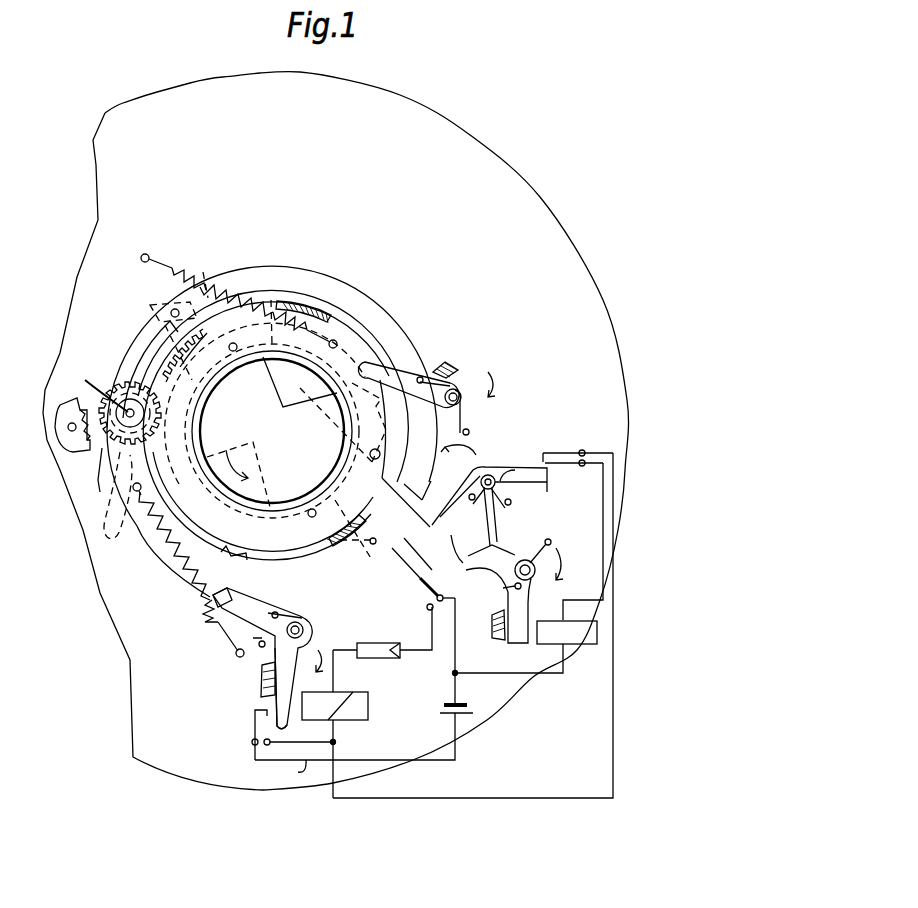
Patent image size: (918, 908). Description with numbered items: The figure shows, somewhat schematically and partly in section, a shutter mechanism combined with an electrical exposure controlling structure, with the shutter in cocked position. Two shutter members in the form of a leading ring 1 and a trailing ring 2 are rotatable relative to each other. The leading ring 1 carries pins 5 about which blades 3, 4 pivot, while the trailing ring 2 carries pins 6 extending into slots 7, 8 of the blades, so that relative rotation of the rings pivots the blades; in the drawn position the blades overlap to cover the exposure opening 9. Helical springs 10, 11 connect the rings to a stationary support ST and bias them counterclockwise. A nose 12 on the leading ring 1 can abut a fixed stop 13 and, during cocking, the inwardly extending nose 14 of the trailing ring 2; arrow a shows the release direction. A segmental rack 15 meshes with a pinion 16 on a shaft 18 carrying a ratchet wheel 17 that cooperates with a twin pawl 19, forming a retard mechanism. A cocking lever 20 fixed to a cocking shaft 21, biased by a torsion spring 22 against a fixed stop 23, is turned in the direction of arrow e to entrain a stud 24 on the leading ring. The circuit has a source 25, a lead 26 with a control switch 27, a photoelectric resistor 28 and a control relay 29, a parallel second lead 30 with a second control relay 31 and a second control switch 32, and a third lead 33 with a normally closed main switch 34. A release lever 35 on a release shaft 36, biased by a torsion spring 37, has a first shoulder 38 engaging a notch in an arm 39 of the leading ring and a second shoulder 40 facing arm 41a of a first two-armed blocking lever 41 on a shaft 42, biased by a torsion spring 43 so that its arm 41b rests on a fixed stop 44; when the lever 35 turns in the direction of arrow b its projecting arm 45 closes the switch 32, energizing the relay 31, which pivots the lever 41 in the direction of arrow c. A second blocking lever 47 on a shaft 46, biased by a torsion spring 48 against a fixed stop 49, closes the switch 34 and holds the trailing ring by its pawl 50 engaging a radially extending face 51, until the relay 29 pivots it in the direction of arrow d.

The stationary support ST is at (512, 180).
The leading ring 1 is at (352, 342).
The trailing ring 2 is at (326, 284).
The blade 3 is at (264, 298).
The blade 4 is at (296, 309).
The pins 5 is at (229, 347).
The pins 6 is at (170, 310).
The slot 7 is at (150, 315).
The slot 8 is at (362, 569).
The exposure opening 9 is at (226, 370).
The helical spring 10 is at (186, 273).
The helical spring 11 is at (183, 582).
The nose 12 is at (268, 562).
The fixed stop 13 is at (354, 522).
The nose 14 is at (238, 552).
The segmental rack 15 is at (168, 358).
The pinion 16 is at (120, 388).
The ratchet wheel 17 is at (112, 472).
The shaft 18 is at (92, 385).
The twin pawl 19 is at (85, 455).
The cocking lever 20 is at (405, 376).
The cocking shaft 21 is at (467, 388).
The torsion spring 22 is at (470, 432).
The fixed stop 23 is at (456, 356).
The stud 24 is at (370, 454).
The source of electrical energy 25 is at (450, 713).
The lead 26 is at (432, 655).
The control switch 27 is at (426, 606).
The photoelectric resistor 28 is at (380, 659).
The control relay 29 is at (362, 716).
The second lead 30 is at (612, 575).
The second control relay 31 is at (580, 646).
The second control switch 32 is at (560, 452).
The third lead 33 is at (300, 768).
The main switch 34 is at (252, 742).
The release lever 35 is at (447, 512).
The release shaft 36 is at (494, 476).
The torsion spring 37 is at (509, 497).
The first shoulder 38 is at (442, 514).
The arm 39 is at (430, 553).
The second shoulder 40 is at (458, 564).
The first two-armed blocking lever 41 is at (505, 646).
The arm 41a is at (503, 557).
The arm 41b is at (518, 644).
The shaft 42 is at (530, 560).
The torsion spring 43 is at (500, 596).
The fixed stop 44 is at (493, 636).
The projecting arm 45 is at (549, 482).
The shaft 46 is at (312, 615).
The second blocking lever 47 is at (270, 660).
The torsion spring 48 is at (260, 638).
The fixed stop 49 is at (262, 688).
The pawl 50 is at (244, 589).
The radially extending face 51 is at (208, 614).
The arrow a is at (239, 463).
The arrow b is at (458, 453).
The arrow c is at (554, 564).
The arrow d is at (314, 662).
The arrow e is at (492, 387).